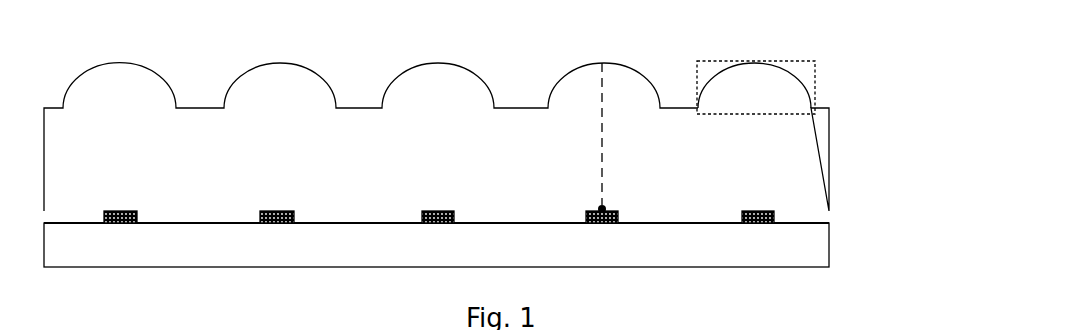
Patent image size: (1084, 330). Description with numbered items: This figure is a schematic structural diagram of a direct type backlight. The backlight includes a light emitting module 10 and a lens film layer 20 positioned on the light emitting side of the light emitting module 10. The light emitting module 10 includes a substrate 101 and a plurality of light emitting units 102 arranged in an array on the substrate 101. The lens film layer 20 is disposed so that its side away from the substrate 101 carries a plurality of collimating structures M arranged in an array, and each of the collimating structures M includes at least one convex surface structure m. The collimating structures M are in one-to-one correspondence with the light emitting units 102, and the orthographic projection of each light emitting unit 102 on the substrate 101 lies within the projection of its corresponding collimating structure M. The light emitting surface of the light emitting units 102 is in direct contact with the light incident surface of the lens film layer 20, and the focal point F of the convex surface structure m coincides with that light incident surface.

The light emitting module 10 is at (503, 236).
The substrate 101 is at (831, 247).
The light emitting units 102 is at (776, 217).
The lens film layer 20 is at (831, 144).
The convex surface structure m is at (774, 68).
The collimating structures M is at (818, 97).
The focal point F is at (728, 138).